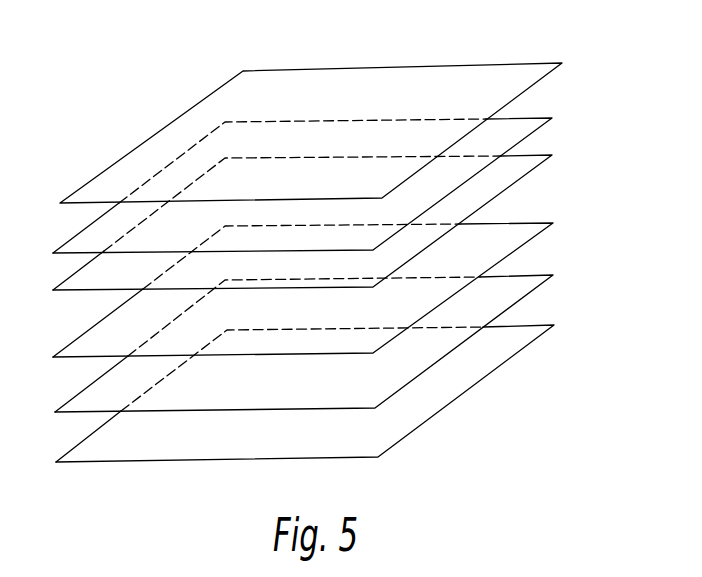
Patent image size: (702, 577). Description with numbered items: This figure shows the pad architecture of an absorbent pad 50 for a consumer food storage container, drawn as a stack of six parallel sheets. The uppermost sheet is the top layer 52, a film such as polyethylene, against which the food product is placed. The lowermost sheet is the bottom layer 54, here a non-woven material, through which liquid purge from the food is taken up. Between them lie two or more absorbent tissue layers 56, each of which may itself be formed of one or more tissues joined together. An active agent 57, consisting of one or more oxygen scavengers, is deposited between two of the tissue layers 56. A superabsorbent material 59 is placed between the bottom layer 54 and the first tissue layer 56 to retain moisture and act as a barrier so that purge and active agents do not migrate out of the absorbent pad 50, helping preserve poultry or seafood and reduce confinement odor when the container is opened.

The absorbent pad 50 is at (344, 237).
The top layer 52 is at (338, 69).
The bottom layer 54 is at (525, 350).
The absorbent tissue layer 56 is at (540, 115).
The active agent 57 is at (528, 170).
The superabsorbent material 59 is at (532, 292).